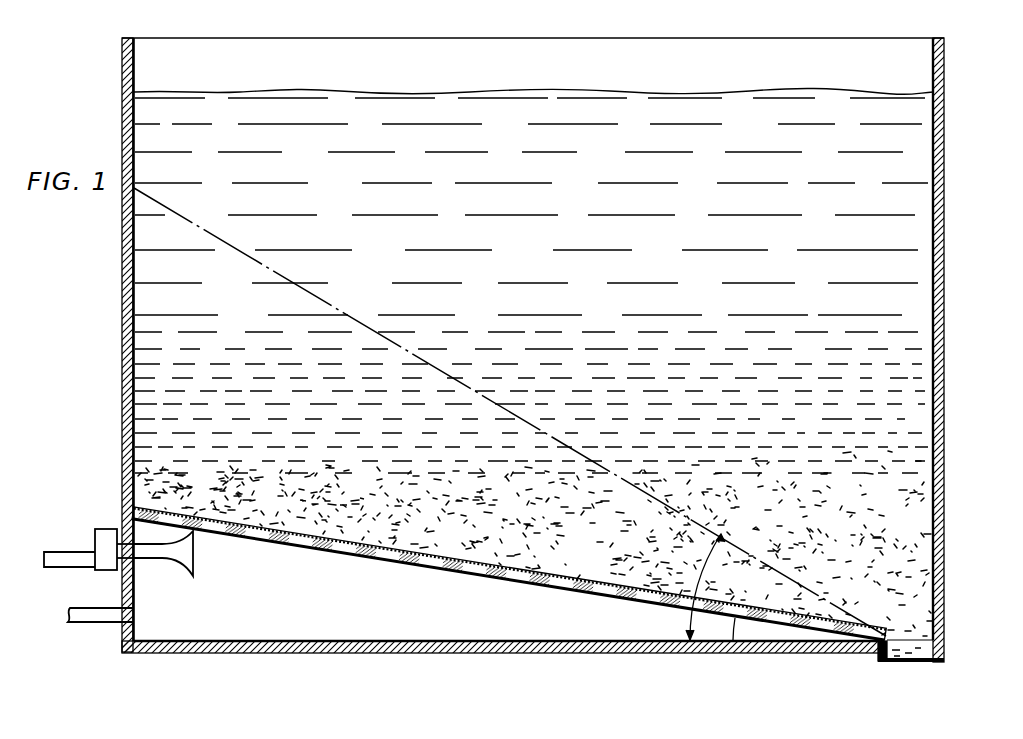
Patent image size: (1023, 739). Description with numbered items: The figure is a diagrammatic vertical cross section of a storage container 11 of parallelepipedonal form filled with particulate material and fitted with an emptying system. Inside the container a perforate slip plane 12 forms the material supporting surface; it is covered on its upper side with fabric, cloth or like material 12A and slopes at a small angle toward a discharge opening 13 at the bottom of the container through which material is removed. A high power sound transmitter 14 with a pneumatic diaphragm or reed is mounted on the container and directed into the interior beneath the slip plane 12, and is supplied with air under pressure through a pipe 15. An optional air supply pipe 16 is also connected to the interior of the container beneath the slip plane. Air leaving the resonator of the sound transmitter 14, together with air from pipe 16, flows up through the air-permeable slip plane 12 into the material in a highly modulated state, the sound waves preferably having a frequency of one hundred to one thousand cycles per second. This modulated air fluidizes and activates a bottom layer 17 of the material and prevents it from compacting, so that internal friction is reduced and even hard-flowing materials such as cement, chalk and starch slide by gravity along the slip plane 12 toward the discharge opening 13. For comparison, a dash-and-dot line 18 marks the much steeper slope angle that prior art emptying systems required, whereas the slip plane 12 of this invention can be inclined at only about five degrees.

The storage container 11 is at (944, 170).
The perforate slip plane 12 is at (447, 570).
The fabric, cloth or like material 12A is at (528, 573).
The discharge opening 13 is at (912, 660).
The sound transmitter 14 is at (193, 556).
The pipe 15 is at (69, 555).
The air supply pipe 16 is at (92, 626).
The bottom layer 17 is at (333, 512).
The dash-and-dot line 18 is at (335, 307).